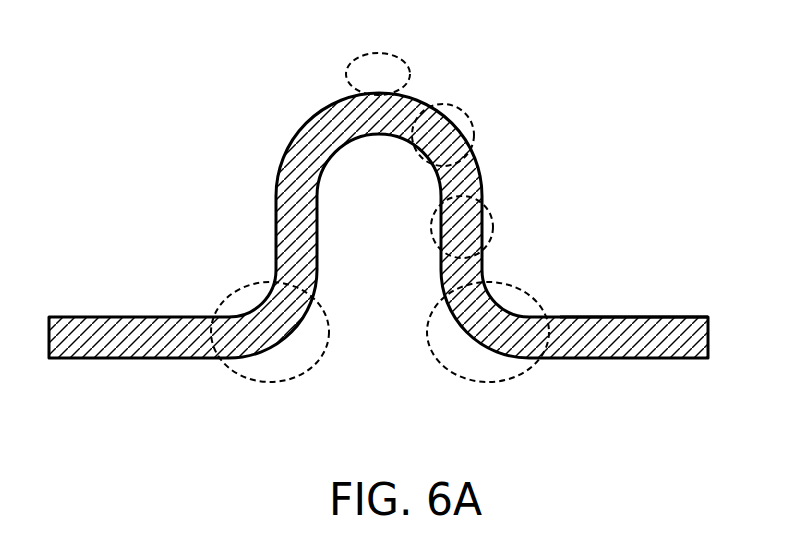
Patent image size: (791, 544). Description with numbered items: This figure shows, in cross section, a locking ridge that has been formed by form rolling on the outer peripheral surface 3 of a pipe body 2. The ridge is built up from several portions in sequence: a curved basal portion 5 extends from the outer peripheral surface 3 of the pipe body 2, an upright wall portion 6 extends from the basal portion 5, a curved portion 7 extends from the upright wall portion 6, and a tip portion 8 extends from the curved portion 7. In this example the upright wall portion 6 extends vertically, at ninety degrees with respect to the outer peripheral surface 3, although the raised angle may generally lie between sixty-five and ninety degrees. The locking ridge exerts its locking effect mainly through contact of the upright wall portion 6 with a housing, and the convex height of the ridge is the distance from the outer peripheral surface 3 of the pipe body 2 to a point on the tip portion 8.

The pipe body 2 is at (668, 358).
The outer peripheral surface 3 is at (647, 317).
The basal portion 5 is at (242, 377).
The upright wall portion 6 is at (493, 220).
The curved portion 7 is at (465, 122).
The tip portion 8 is at (397, 58).